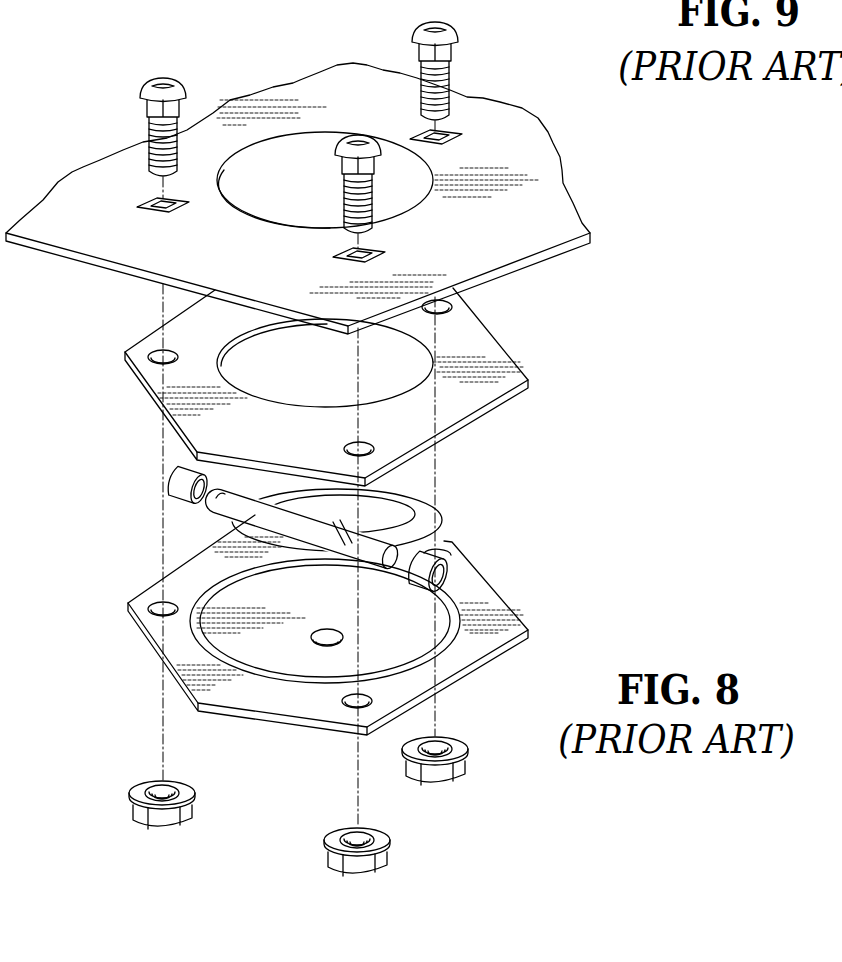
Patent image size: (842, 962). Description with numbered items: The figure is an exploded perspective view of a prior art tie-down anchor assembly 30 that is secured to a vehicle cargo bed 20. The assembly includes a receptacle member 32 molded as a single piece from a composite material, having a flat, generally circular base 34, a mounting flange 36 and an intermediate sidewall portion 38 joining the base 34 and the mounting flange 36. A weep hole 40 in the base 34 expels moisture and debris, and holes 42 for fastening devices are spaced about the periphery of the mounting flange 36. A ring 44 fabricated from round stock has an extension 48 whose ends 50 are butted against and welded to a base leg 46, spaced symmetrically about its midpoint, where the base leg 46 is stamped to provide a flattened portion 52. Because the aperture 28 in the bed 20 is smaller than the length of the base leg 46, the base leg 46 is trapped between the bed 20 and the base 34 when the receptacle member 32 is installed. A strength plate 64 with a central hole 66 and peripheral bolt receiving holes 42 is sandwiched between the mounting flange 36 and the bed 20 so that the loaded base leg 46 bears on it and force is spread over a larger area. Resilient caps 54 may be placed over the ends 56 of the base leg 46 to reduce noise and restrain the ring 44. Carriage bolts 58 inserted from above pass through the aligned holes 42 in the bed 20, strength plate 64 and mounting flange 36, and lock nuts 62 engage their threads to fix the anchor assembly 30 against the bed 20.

The cargo bed 20 is at (270, 271).
The aperture 28 is at (302, 128).
The carriage bolts 58 is at (162, 78).
The holes 42 is at (153, 198).
The strength plate 64 is at (274, 447).
The central hole 66 is at (450, 328).
The ring 44 is at (428, 464).
The extension 48 is at (443, 498).
The ends 50 is at (313, 488).
The flattened portion 52 is at (310, 508).
The ends 56 is at (228, 510).
The resilient caps 54 is at (170, 480).
The base leg 46 is at (226, 523).
The receptacle member 32 is at (542, 596).
The mounting flange 36 is at (166, 637).
The intermediate sidewall portion 38 is at (245, 574).
The weep hole 40 is at (299, 651).
The base 34 is at (439, 644).
The lock nuts 62 is at (154, 782).
The tie-down anchor assembly 30 is at (268, 817).